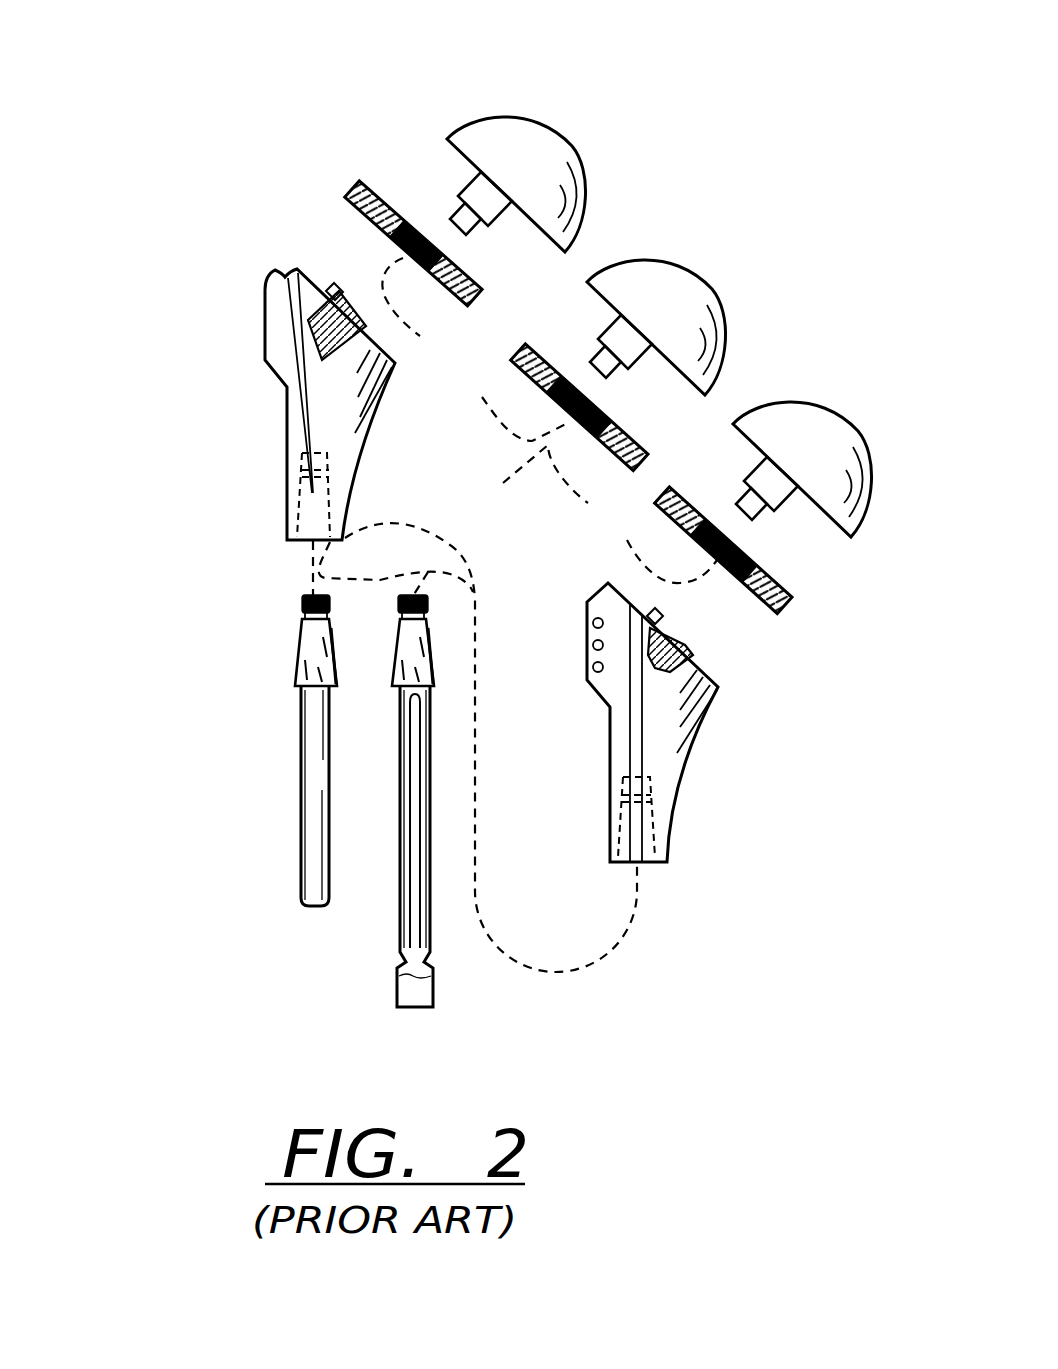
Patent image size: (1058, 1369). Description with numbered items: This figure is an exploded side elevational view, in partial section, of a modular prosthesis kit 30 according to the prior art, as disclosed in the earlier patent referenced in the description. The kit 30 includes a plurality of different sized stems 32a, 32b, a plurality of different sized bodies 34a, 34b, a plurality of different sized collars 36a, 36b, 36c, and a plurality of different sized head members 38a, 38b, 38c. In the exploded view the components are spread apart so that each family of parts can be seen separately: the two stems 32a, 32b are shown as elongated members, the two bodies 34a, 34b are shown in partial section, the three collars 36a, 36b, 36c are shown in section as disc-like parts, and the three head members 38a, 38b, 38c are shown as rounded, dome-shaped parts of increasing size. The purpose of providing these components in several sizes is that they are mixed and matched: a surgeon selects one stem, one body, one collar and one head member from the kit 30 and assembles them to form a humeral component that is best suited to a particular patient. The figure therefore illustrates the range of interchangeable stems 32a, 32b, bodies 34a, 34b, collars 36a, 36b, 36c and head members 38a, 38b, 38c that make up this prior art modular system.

The kit 30 is at (280, 952).
The stem 32a is at (302, 811).
The stem 32b is at (430, 915).
The body 34a is at (287, 455).
The body 34b is at (690, 758).
The collar 36a is at (355, 188).
The collar 36b is at (531, 343).
The collar 36c is at (792, 602).
The head member 38a is at (513, 117).
The head member 38b is at (671, 268).
The head member 38c is at (819, 421).